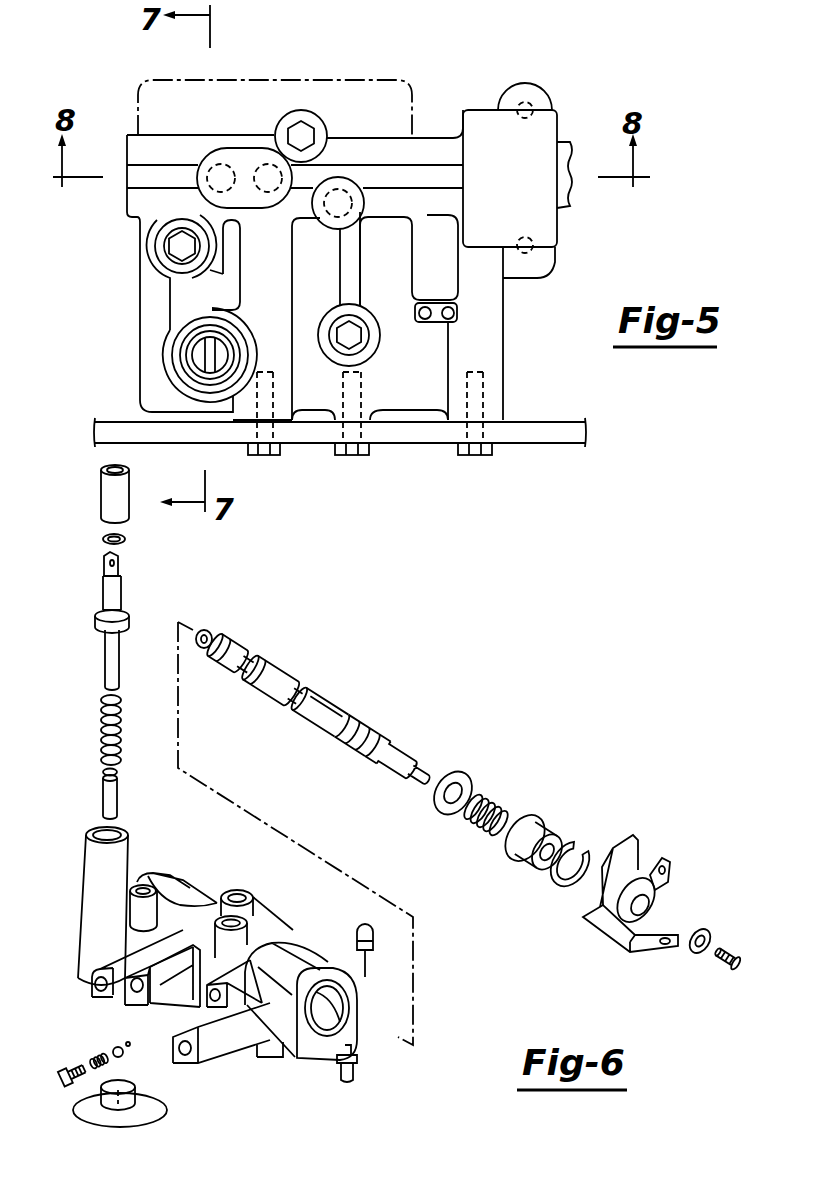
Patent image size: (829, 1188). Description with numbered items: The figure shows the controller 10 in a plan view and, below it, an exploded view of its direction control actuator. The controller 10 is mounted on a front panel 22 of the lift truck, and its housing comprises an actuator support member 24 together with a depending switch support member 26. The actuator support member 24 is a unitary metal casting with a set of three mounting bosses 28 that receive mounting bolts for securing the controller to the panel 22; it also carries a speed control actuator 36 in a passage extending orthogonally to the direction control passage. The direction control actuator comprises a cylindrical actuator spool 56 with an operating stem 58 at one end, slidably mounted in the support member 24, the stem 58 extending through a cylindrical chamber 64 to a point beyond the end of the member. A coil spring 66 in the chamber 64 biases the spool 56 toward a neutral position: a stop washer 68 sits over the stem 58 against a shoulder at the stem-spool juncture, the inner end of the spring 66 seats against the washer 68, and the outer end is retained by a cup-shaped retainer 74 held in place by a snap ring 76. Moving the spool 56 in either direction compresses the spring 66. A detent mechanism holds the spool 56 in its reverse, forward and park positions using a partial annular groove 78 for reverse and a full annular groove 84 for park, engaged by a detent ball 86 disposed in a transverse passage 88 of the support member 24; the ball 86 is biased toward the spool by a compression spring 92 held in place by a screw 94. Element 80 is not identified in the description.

In FIG. 5, the controller 10 is at (122, 291).
In FIG. 5, the front panel 22 is at (554, 416).
In FIG. 5, the actuator support member 24 is at (526, 367).
In FIG. 6, the actuator support member 24 is at (251, 977).
In FIG. 5, the switch support member 26 is at (368, 75).
In FIG. 5, the mounting bosses 28 is at (237, 420).
In FIG. 5, the speed control actuator 36 is at (180, 360).
In FIG. 6, the actuator spool 56 is at (337, 711).
In FIG. 6, the operating stem 58 is at (406, 766).
In FIG. 6, the cylindrical chamber 64 is at (338, 1003).
In FIG. 6, the coil spring 66 is at (496, 800).
In FIG. 6, the stop washer 68 is at (470, 773).
In FIG. 6, the cup-shaped retainer 74 is at (549, 826).
In FIG. 6, the snap ring 76 is at (584, 848).
In FIG. 6, the partial annular groove 78 is at (378, 748).
In FIG. 6, the spool grooves 80 is at (357, 735).
In FIG. 6, the full annular groove 84 is at (319, 711).
In FIG. 6, the detent ball 86 is at (129, 1046).
In FIG. 6, the transverse passage 88 is at (216, 1001).
In FIG. 6, the compression spring 92 is at (104, 1050).
In FIG. 6, the screw 94 is at (60, 1072).